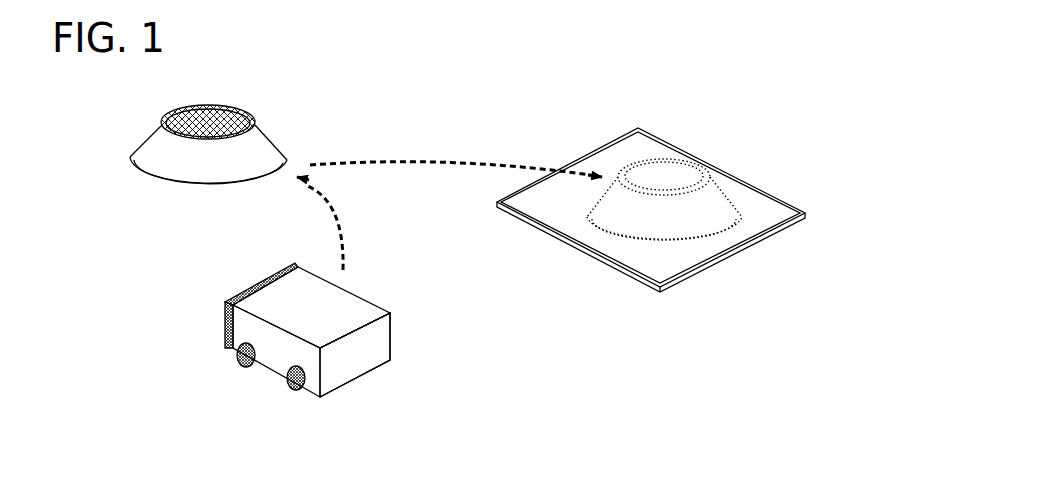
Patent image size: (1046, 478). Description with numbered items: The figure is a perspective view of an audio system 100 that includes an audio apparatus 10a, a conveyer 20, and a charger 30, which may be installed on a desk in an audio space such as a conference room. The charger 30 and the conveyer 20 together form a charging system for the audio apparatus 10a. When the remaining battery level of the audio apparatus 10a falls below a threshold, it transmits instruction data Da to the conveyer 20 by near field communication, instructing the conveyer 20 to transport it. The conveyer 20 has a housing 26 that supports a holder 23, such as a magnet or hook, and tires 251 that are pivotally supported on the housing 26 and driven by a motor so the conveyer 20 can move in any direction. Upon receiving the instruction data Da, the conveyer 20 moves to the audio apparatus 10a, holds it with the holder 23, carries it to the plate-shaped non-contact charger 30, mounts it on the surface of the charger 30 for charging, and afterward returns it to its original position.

The audio system 100 is at (820, 144).
The audio apparatus 10a is at (157, 127).
The instruction data Da is at (222, 192).
The conveyer 20 is at (316, 331).
The holder 23 is at (225, 321).
The tires 251 is at (286, 378).
The housing 26 is at (392, 335).
The charger 30 is at (670, 145).